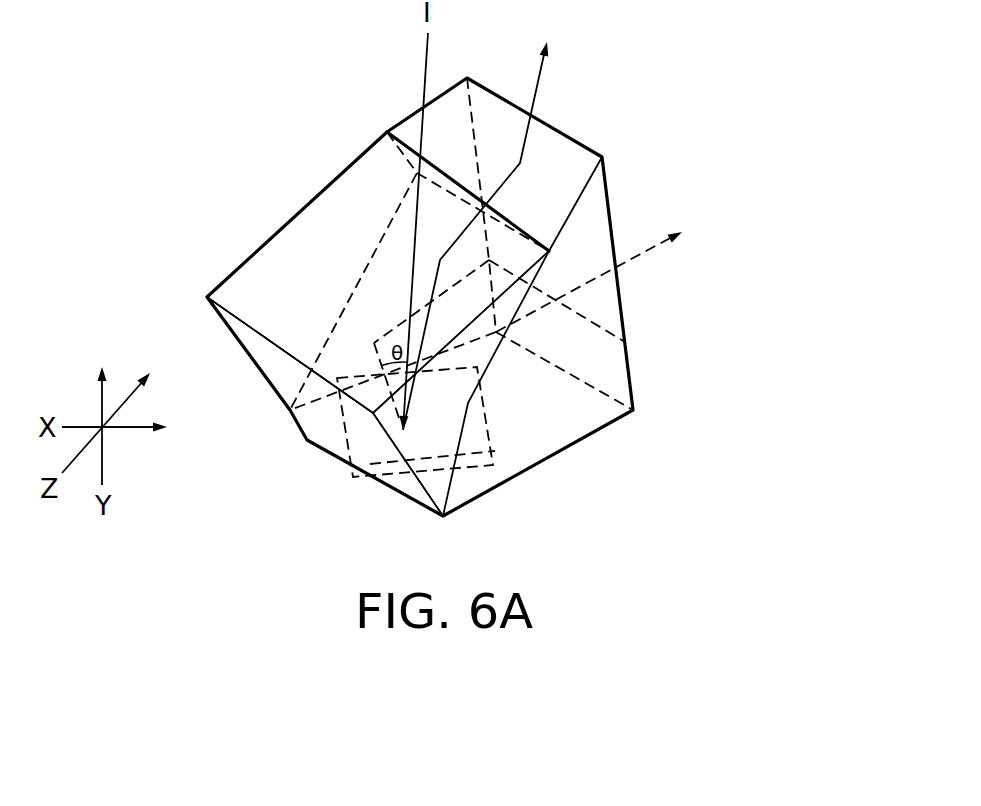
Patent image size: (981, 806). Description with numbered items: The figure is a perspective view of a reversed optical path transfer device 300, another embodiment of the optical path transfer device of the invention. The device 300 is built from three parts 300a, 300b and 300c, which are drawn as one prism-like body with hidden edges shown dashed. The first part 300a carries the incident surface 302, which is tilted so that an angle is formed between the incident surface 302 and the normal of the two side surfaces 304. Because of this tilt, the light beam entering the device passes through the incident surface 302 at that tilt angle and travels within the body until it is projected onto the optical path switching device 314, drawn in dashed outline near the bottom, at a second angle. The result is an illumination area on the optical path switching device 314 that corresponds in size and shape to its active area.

The reversed optical path transfer device 300 is at (729, 364).
The first part 300a is at (443, 435).
The second part 300b is at (560, 437).
The third part 300c is at (580, 350).
The incident surface 302 is at (312, 240).
The side surfaces 304 is at (221, 271).
The optical path switching device 314 is at (477, 470).